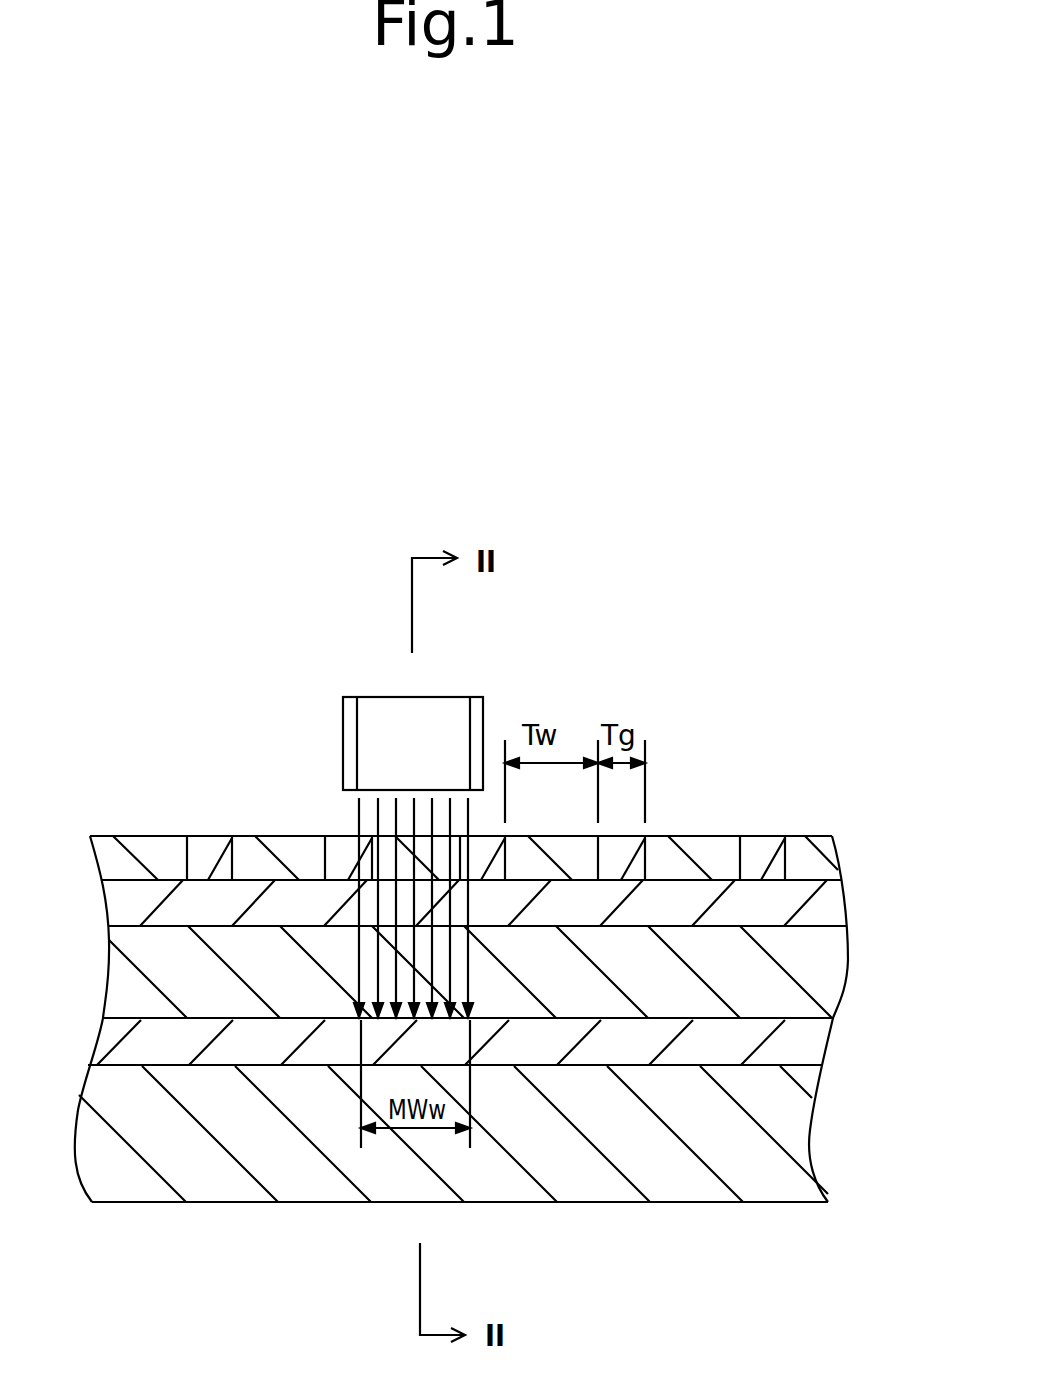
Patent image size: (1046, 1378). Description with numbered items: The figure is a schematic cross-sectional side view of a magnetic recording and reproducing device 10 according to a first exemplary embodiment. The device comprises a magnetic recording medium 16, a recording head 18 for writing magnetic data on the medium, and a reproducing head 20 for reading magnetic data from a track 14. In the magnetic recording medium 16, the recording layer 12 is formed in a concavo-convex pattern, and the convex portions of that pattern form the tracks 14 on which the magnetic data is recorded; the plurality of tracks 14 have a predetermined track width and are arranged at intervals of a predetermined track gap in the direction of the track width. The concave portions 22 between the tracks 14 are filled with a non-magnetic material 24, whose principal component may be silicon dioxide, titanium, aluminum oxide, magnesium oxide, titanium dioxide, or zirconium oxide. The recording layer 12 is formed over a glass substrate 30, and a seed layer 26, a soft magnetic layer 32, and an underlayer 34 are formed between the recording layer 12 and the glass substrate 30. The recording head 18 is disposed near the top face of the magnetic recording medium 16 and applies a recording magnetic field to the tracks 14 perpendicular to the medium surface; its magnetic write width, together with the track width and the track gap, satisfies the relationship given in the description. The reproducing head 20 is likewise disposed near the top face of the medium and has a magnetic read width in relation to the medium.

The magnetic recording and reproducing device 10 is at (503, 440).
The recording layer 12 is at (846, 852).
The track 14 is at (717, 842).
The magnetic recording medium 16 is at (205, 805).
The recording head 18 is at (375, 710).
The reproducing head 20 is at (477, 698).
The concave portion 22 is at (623, 858).
The non-magnetic material 24 is at (620, 870).
The seed layer 26 is at (846, 905).
The glass substrate 30 is at (808, 1133).
The soft magnetic layer 32 is at (848, 962).
The underlayer 34 is at (830, 1045).